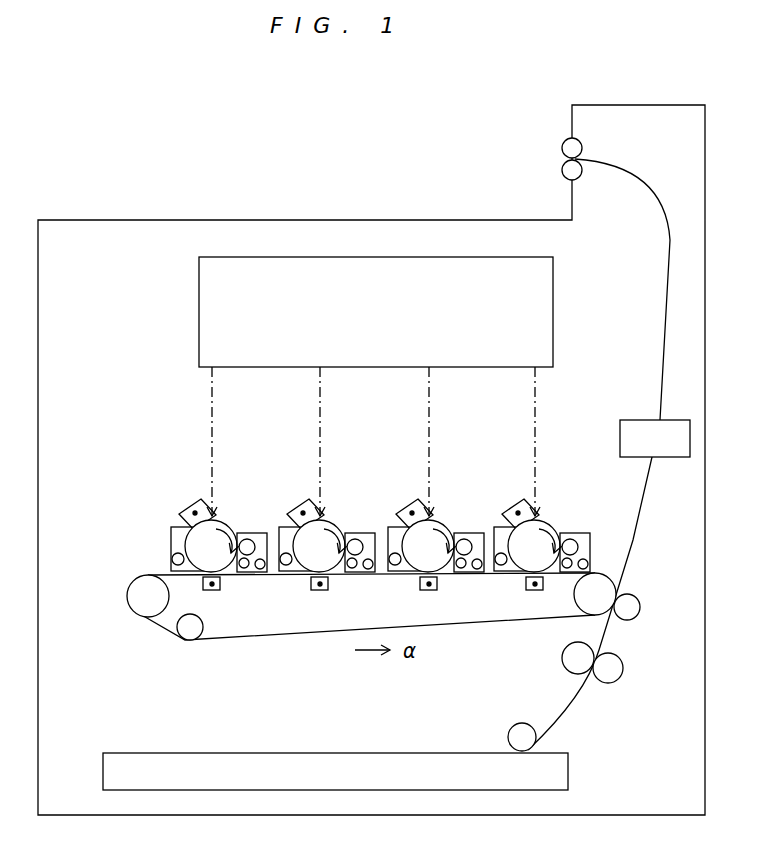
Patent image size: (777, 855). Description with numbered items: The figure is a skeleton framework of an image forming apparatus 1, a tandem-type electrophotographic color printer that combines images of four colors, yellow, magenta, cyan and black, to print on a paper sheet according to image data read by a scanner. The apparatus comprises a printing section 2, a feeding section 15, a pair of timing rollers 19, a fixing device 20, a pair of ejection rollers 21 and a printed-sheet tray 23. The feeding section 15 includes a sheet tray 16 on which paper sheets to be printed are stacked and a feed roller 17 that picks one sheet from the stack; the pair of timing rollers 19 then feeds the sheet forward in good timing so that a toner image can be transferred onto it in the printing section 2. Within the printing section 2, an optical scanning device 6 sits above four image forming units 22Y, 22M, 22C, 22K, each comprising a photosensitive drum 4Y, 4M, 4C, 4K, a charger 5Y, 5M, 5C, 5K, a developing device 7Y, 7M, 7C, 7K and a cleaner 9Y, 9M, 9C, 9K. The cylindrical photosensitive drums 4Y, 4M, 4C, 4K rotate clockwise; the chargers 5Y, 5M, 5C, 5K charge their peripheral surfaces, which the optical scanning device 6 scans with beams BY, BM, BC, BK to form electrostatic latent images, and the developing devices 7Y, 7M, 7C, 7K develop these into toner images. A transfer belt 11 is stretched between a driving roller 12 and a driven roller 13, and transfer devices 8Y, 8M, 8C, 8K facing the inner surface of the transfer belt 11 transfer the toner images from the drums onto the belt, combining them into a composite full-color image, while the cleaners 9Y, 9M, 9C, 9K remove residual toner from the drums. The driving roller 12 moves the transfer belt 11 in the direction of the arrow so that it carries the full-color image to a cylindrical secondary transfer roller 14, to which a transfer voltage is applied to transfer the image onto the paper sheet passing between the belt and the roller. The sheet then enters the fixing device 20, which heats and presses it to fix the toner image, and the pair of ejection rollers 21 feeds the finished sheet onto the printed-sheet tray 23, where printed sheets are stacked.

The image forming apparatus 1 is at (47, 108).
The printing section 2 is at (148, 418).
The printed-sheet tray 23 is at (415, 219).
The optical scanning device 6 is at (555, 305).
The fixing device 20 is at (690, 440).
The pair of ejection rollers 21 is at (593, 145).
The beam BK is at (212, 417).
The beam BC is at (345, 441).
The beam BM is at (454, 441).
The beam BY is at (561, 441).
The photosensitive drum 4K is at (229, 522).
The photosensitive drum 4C is at (335, 535).
The photosensitive drum 4M is at (444, 535).
The photosensitive drum 4Y is at (550, 535).
The charger 5K is at (189, 503).
The charger 5C is at (292, 499).
The charger 5M is at (401, 499).
The charger 5Y is at (507, 499).
The developing device 7K is at (253, 573).
The developing device 7C is at (361, 575).
The developing device 7M is at (470, 575).
The developing device 7Y is at (595, 550).
The transfer device 8K is at (212, 590).
The transfer device 8C is at (326, 604).
The transfer device 8M is at (440, 599).
The transfer device 8Y is at (546, 598).
The cleaner 9K is at (181, 566).
The cleaner 9C is at (296, 572).
The cleaner 9M is at (405, 572).
The cleaner 9Y is at (511, 572).
The image forming unit 22K is at (227, 507).
The image forming unit 22C is at (351, 477).
The image forming unit 22M is at (460, 477).
The image forming unit 22Y is at (566, 477).
The transfer belt 11 is at (272, 637).
The driving roller 12 is at (600, 589).
The driven roller 13 is at (146, 612).
The secondary transfer roller 14 is at (638, 607).
The feeding section 15 is at (494, 715).
The sheet tray 16 is at (395, 752).
The feed roller 17 is at (531, 725).
The pair of timing rollers 19 is at (628, 670).